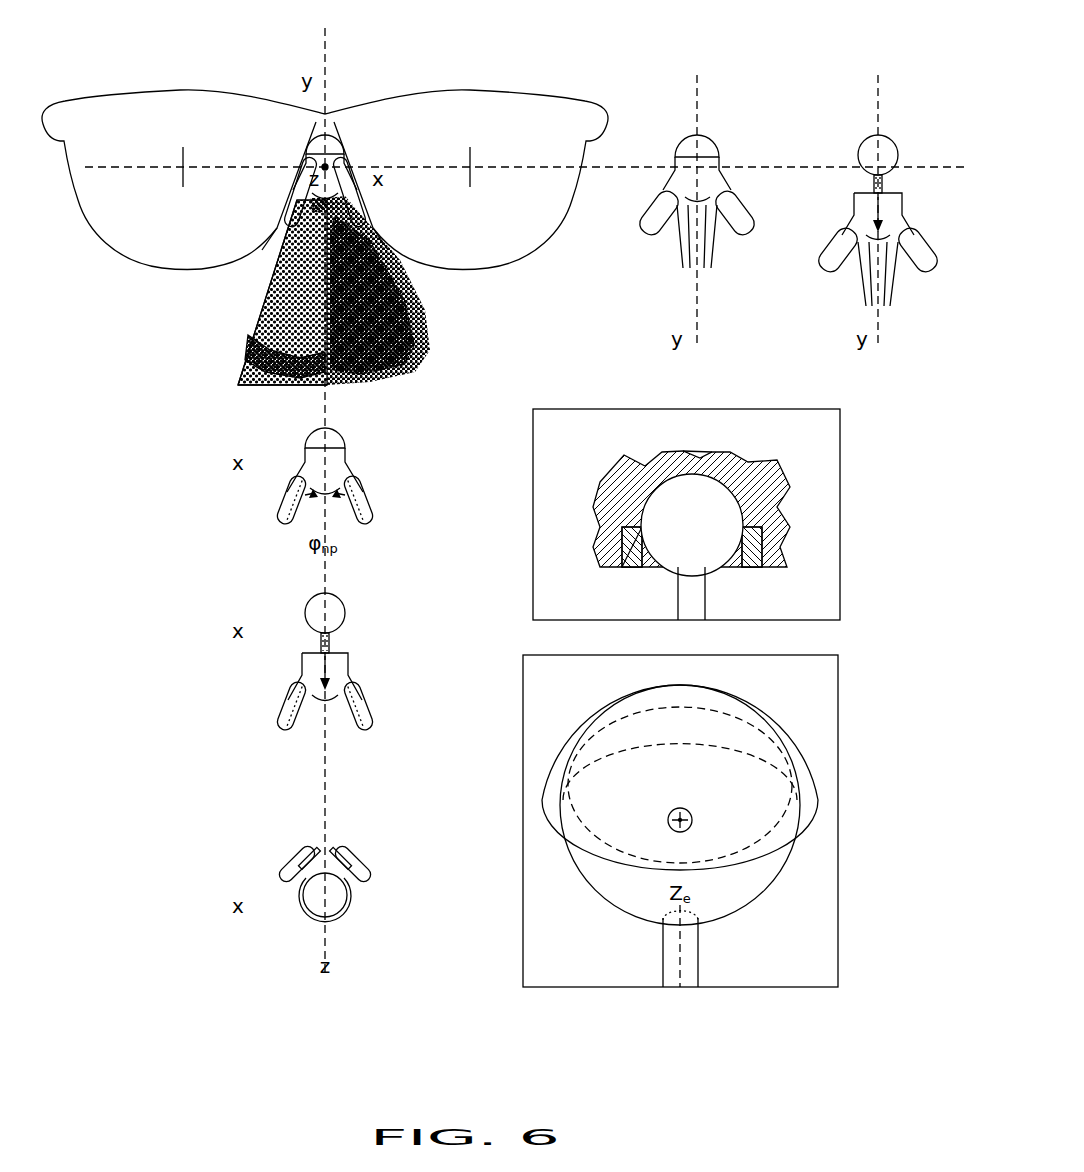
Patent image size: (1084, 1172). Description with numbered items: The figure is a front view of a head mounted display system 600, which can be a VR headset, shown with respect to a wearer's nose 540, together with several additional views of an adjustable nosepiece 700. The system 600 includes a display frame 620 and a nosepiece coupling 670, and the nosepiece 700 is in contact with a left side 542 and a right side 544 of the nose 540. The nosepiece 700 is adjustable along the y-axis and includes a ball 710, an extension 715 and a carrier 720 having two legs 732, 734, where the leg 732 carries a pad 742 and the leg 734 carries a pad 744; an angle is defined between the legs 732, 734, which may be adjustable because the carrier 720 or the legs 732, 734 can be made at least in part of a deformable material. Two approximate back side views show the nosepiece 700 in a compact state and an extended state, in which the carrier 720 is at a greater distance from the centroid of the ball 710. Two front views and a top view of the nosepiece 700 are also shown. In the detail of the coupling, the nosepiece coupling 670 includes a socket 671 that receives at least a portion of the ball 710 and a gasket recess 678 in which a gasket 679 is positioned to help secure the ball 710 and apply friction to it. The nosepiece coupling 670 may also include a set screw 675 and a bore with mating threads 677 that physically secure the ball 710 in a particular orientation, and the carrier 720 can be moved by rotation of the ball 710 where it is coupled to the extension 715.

The head mounted display system 600 is at (325, 150).
The display frame 620 is at (450, 92).
The nose 540 is at (430, 329).
The left side of the nose 542 is at (285, 238).
The right side of the nose 544 is at (367, 249).
The nosepiece coupling 670 is at (345, 150).
The socket 671 is at (735, 470).
The set screw 675 is at (694, 815).
The bore with mating threads 677 is at (670, 824).
The gasket recess 678 is at (620, 540).
The gasket 679 is at (634, 560).
The nosepiece 700 is at (283, 213).
The ball 710 is at (690, 150).
The extension 715 is at (872, 186).
The carrier 720 is at (688, 176).
The leg 732 is at (708, 264).
The leg 734 is at (686, 264).
The pad 742 is at (736, 232).
The pad 744 is at (655, 232).